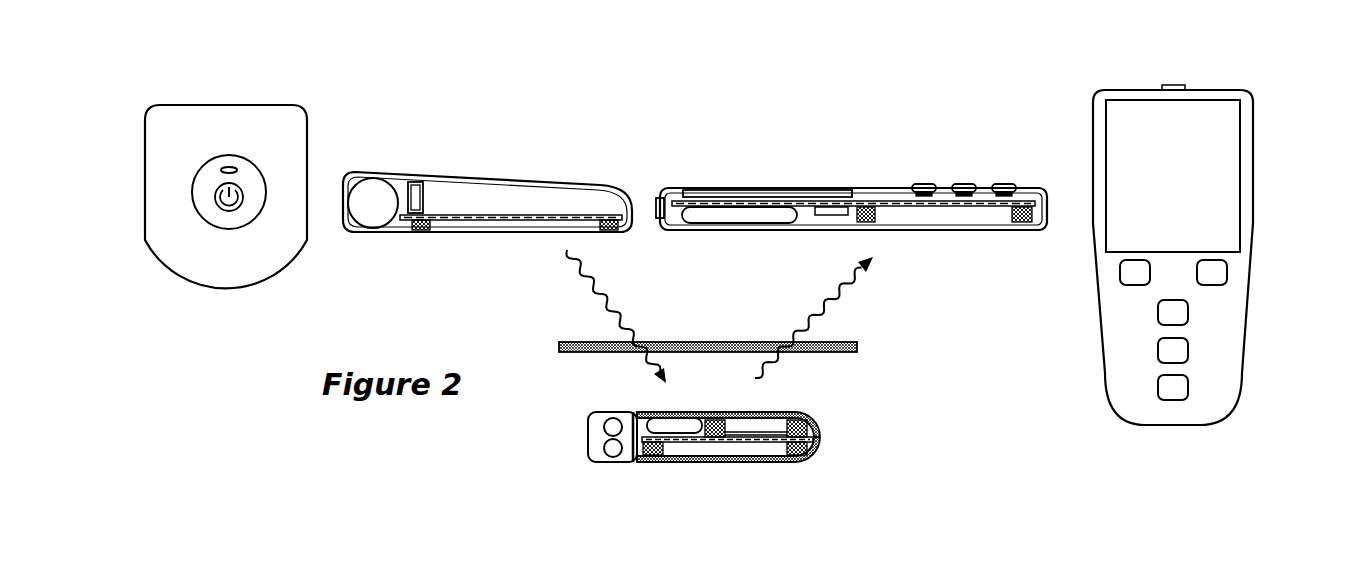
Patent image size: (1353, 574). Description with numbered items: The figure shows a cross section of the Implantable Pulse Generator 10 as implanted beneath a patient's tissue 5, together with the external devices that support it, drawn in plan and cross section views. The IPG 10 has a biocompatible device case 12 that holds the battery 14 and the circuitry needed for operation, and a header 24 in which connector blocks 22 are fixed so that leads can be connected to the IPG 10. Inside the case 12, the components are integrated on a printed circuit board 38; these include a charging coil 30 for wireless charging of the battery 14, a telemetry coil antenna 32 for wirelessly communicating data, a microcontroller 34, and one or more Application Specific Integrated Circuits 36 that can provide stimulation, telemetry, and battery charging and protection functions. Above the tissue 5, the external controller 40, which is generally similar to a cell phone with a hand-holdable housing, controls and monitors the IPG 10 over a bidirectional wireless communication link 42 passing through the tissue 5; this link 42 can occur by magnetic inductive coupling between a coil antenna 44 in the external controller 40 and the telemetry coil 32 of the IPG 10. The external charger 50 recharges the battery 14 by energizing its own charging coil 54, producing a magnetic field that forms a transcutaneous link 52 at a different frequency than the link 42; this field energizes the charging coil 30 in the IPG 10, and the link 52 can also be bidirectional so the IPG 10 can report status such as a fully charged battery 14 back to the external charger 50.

The patient's tissue 5 is at (714, 342).
The Implantable Pulse Generator 10 is at (868, 378).
The device case 12 is at (690, 412).
The battery 14 is at (657, 419).
The connector blocks 22 is at (605, 428).
The header 24 is at (600, 412).
The charging coil 30 is at (652, 455).
The telemetry coil antenna 32 is at (716, 420).
The microcontroller 34 is at (744, 436).
The Application Specific Integrated Circuit 36 is at (776, 433).
The printed circuit board 38 is at (821, 436).
The external controller 40 is at (912, 151).
The bidirectional wireless communication link 42 is at (823, 309).
The coil antenna 44 is at (858, 206).
The external charger 50 is at (215, 88).
The transcutaneous link 52 is at (618, 318).
The charging coil 54 is at (412, 226).